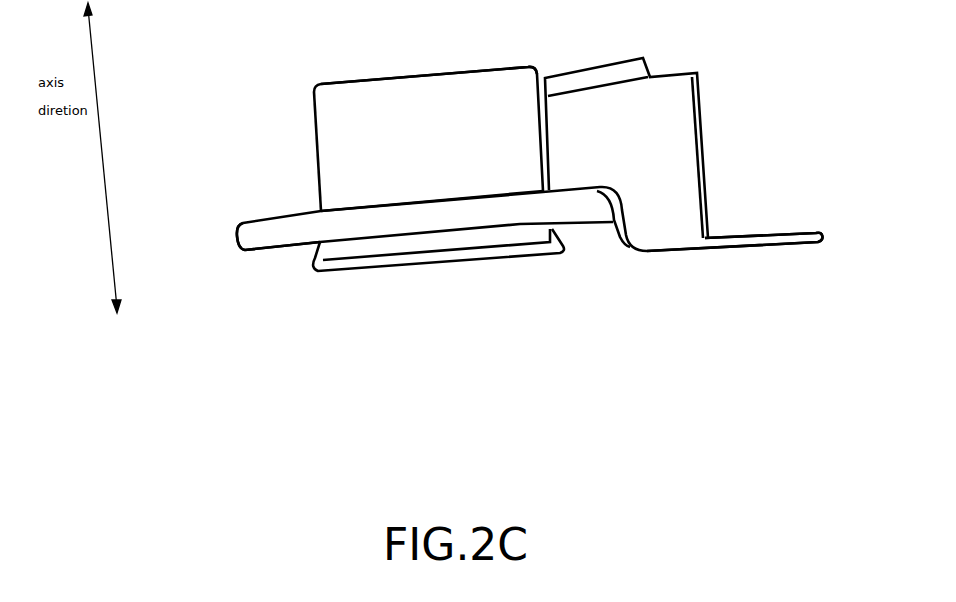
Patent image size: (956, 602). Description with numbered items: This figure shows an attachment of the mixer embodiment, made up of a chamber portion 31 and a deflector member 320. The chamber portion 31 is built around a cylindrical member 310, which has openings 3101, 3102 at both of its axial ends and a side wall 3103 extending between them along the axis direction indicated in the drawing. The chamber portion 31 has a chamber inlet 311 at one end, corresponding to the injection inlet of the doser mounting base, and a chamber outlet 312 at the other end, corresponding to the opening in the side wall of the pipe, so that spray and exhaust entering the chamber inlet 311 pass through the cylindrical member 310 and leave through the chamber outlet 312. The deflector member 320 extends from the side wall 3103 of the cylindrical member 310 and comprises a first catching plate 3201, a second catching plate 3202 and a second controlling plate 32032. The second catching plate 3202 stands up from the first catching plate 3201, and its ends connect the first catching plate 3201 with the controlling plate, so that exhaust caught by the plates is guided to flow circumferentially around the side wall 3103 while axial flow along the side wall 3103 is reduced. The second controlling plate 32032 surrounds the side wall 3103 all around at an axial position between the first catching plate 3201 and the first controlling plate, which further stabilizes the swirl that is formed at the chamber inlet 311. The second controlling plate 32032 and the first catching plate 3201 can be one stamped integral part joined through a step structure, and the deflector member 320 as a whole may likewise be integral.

The cylindrical member 310 is at (363, 179).
The chamber portion 31 is at (363, 179).
The opening at axial end of cylindrical member 3101 is at (458, 49).
The chamber inlet 311 is at (393, 65).
The opening at axial end of cylindrical member 3102 is at (421, 286).
The chamber outlet 312 is at (367, 270).
The side wall of cylindrical member 3103 is at (323, 152).
The deflector member 320 is at (498, 201).
The first catching plate 3201 is at (757, 233).
The second catching plate 3202 is at (683, 140).
The second controlling plate 32032 is at (272, 232).